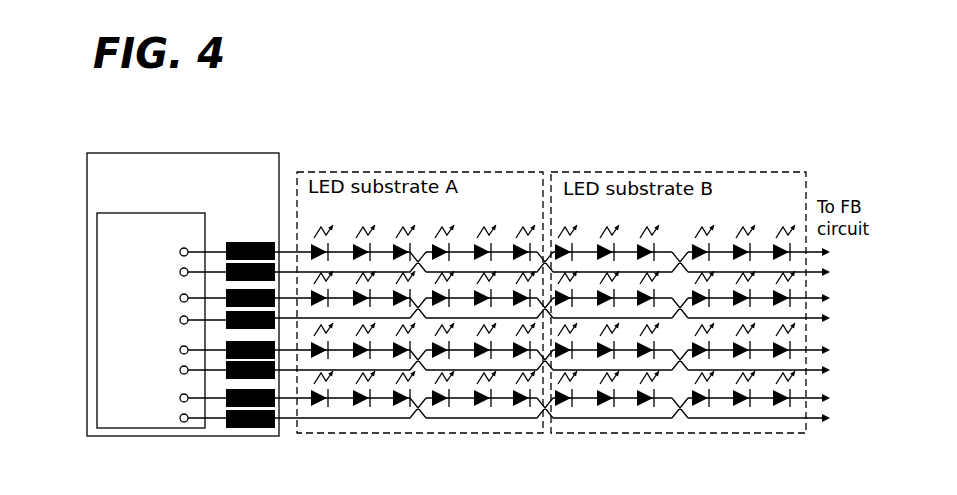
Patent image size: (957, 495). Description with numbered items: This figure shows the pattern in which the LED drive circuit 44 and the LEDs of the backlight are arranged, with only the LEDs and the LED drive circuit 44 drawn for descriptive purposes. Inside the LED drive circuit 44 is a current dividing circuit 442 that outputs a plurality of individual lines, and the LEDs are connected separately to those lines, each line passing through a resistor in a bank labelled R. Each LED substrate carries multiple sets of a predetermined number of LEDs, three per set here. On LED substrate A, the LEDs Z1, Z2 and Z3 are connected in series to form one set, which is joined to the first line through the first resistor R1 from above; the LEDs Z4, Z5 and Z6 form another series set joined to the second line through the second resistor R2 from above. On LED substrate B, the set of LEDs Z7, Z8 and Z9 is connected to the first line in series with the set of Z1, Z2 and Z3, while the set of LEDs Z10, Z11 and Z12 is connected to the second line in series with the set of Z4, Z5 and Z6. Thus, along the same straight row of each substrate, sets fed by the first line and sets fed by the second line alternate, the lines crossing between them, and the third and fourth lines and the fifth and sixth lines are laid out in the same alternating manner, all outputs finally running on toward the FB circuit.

The LED drive circuit 44 is at (250, 153).
The current dividing circuit 442 is at (97, 279).
The first resistor R1 is at (240, 242).
The second resistor R2 is at (226, 278).
The LED Z1 is at (322, 308).
The LED Z2 is at (363, 308).
The LED Z3 is at (403, 308).
The LED Z4 is at (442, 308).
The LED Z5 is at (484, 308).
The LED Z6 is at (523, 308).
The LED Z7 is at (569, 308).
The LED Z8 is at (611, 308).
The LED Z9 is at (650, 308).
The LED Z10 is at (700, 308).
The LED Z11 is at (747, 308).
The LED Z12 is at (783, 308).